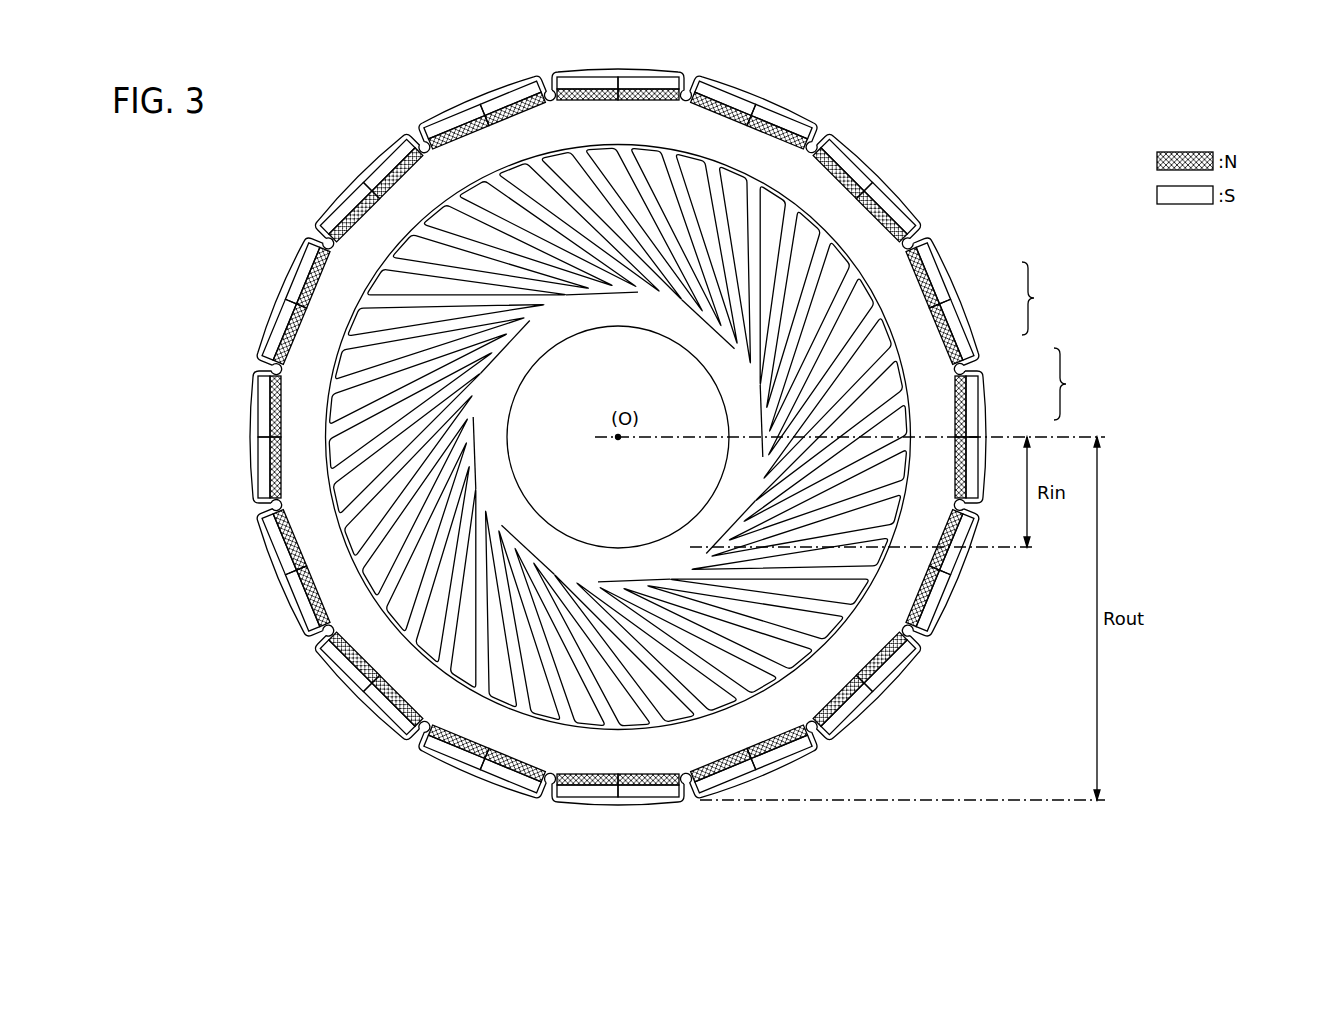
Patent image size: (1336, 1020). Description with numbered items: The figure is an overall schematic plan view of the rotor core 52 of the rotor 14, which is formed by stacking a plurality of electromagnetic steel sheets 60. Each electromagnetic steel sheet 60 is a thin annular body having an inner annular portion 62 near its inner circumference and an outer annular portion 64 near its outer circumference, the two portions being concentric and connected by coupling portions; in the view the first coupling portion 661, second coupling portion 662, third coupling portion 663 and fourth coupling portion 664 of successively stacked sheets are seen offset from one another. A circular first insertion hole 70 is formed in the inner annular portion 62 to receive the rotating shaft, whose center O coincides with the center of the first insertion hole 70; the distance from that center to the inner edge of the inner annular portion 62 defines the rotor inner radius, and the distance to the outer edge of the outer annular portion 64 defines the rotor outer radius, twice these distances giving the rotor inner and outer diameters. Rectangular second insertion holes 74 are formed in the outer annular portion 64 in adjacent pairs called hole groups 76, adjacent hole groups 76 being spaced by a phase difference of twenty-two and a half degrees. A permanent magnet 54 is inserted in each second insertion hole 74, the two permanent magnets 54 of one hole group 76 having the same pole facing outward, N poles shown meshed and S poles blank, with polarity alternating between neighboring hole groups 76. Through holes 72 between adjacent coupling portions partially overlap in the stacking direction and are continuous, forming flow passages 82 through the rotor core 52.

The rotor 14 is at (284, 130).
The rotor core 52 is at (724, 437).
The permanent magnet 54 is at (940, 282).
The electromagnetic steel sheet 60 is at (556, 423).
The inner annular portion 62 is at (633, 302).
The outer annular portion 64 is at (556, 423).
The first insertion hole 70 is at (516, 474).
The through hole 72 is at (345, 650).
The second insertion hole 74 is at (300, 284).
The hole group 76 is at (245, 365).
The flow passage 82 is at (878, 198).
The first coupling portion 661 is at (508, 170).
The second coupling portion 662 is at (472, 186).
The third coupling portion 663 is at (435, 220).
The fourth coupling portion 664 is at (400, 248).